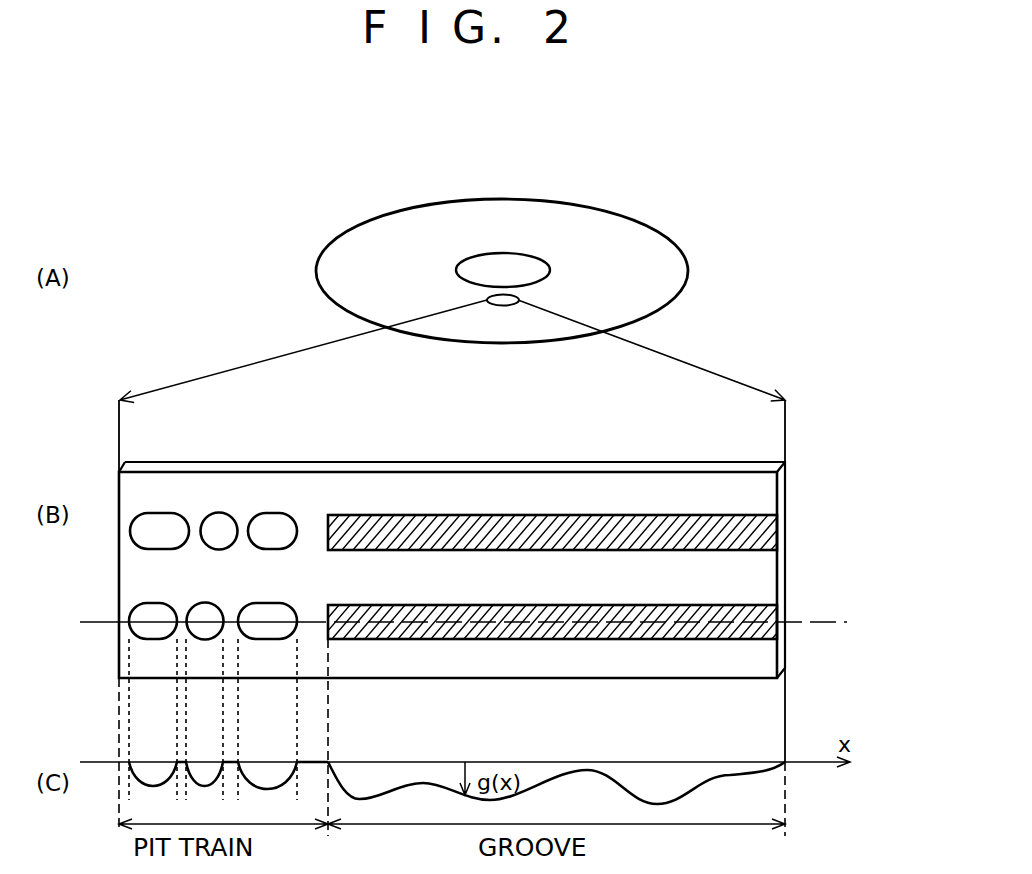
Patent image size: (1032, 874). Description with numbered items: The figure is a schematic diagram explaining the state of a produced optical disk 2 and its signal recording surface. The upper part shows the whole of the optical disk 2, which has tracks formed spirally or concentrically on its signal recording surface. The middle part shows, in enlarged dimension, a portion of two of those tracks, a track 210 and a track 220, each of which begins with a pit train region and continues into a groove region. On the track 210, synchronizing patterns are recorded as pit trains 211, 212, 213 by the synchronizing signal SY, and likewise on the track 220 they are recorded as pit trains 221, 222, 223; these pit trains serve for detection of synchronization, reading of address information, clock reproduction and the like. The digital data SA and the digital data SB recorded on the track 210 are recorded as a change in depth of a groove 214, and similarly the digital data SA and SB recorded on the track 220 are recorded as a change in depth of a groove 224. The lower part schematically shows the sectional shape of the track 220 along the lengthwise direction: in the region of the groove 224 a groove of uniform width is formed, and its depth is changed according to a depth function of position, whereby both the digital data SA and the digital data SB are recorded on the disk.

The optical disk 2 is at (415, 204).
The track 210 is at (512, 503).
The pit train 211 is at (155, 513).
The pit train 212 is at (214, 513).
The pit train 213 is at (276, 513).
The groove 214 is at (439, 515).
The track 220 is at (517, 585).
The pit train 221 is at (152, 601).
The pit train 222 is at (205, 601).
The pit train 223 is at (272, 601).
The groove 224 is at (436, 603).